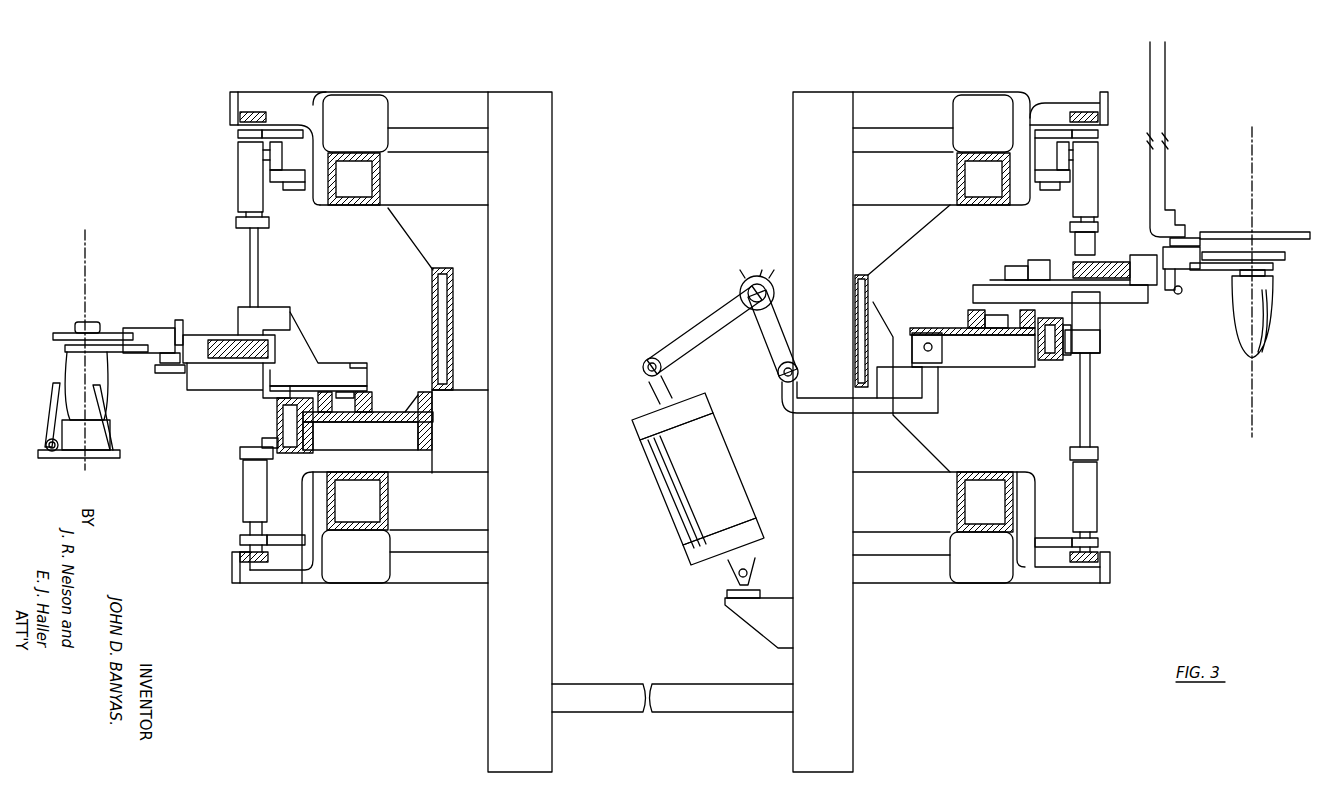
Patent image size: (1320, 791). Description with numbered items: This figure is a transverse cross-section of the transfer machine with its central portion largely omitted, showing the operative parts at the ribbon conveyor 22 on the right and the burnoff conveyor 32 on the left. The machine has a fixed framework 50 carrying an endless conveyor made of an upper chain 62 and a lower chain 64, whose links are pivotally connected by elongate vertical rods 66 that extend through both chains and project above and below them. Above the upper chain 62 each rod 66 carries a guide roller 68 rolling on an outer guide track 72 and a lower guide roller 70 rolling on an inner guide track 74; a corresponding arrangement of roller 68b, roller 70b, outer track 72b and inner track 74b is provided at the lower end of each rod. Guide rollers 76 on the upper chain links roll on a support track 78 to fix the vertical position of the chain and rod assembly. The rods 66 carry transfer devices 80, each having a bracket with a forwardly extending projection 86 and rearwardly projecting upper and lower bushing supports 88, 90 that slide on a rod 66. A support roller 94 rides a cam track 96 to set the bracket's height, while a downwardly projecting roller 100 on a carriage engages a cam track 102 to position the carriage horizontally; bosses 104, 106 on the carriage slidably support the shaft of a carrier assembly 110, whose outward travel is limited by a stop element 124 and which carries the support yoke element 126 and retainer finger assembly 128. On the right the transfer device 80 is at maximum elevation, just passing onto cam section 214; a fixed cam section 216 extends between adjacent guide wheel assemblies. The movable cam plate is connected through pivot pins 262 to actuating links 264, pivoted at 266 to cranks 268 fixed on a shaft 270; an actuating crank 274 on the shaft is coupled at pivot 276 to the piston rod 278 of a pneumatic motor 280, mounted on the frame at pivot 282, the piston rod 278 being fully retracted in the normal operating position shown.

The ribbon conveyor 22 is at (1168, 195).
The burnoff conveyor 32 is at (1206, 232).
The fixed framework 50 is at (735, 175).
The upper chain 62 is at (238, 152).
The lower chain 64 is at (243, 476).
The vertical rod 66 is at (252, 258).
The guide roller 68 is at (262, 112).
The lower guide roller 68b is at (252, 562).
The lower guide roller 70 is at (272, 130).
The lower guide roller 70b is at (240, 541).
The outer guide track 72 is at (230, 100).
The lower outer guide track 72b is at (232, 563).
The inner guide track 74 is at (295, 130).
The lower inner guide track 74b is at (283, 535).
The guide roller 76 is at (272, 155).
The support track 78 is at (290, 178).
The transfer device 80 is at (328, 345).
The forwardly extending projection 86 is at (1085, 305).
The upper bushing support 88 is at (1094, 240).
The lower bushing support 90 is at (1092, 345).
The support roller 94 is at (283, 420).
The cam track 96 is at (268, 445).
The roller 100 is at (355, 395).
The cam track 102 is at (380, 412).
The boss 104 is at (1040, 260).
The boss 106 is at (196, 335).
The carrier assembly 110 is at (165, 325).
The stop element 124 is at (1178, 295).
The support yoke element 126 is at (68, 322).
The retainer finger assembly 128 is at (103, 355).
The cam section 214 is at (968, 322).
The fixed cam section 216 is at (972, 347).
The pivot pin 262 is at (935, 352).
The actuating link 264 is at (820, 413).
The pivot 266 is at (778, 378).
The crank 268 is at (778, 354).
The shaft 270 is at (750, 292).
The actuating crank 274 is at (693, 328).
The pivot 276 is at (643, 363).
The piston rod 278 is at (655, 397).
The pneumatic motor 280 is at (668, 484).
The pivot 282 is at (728, 578).